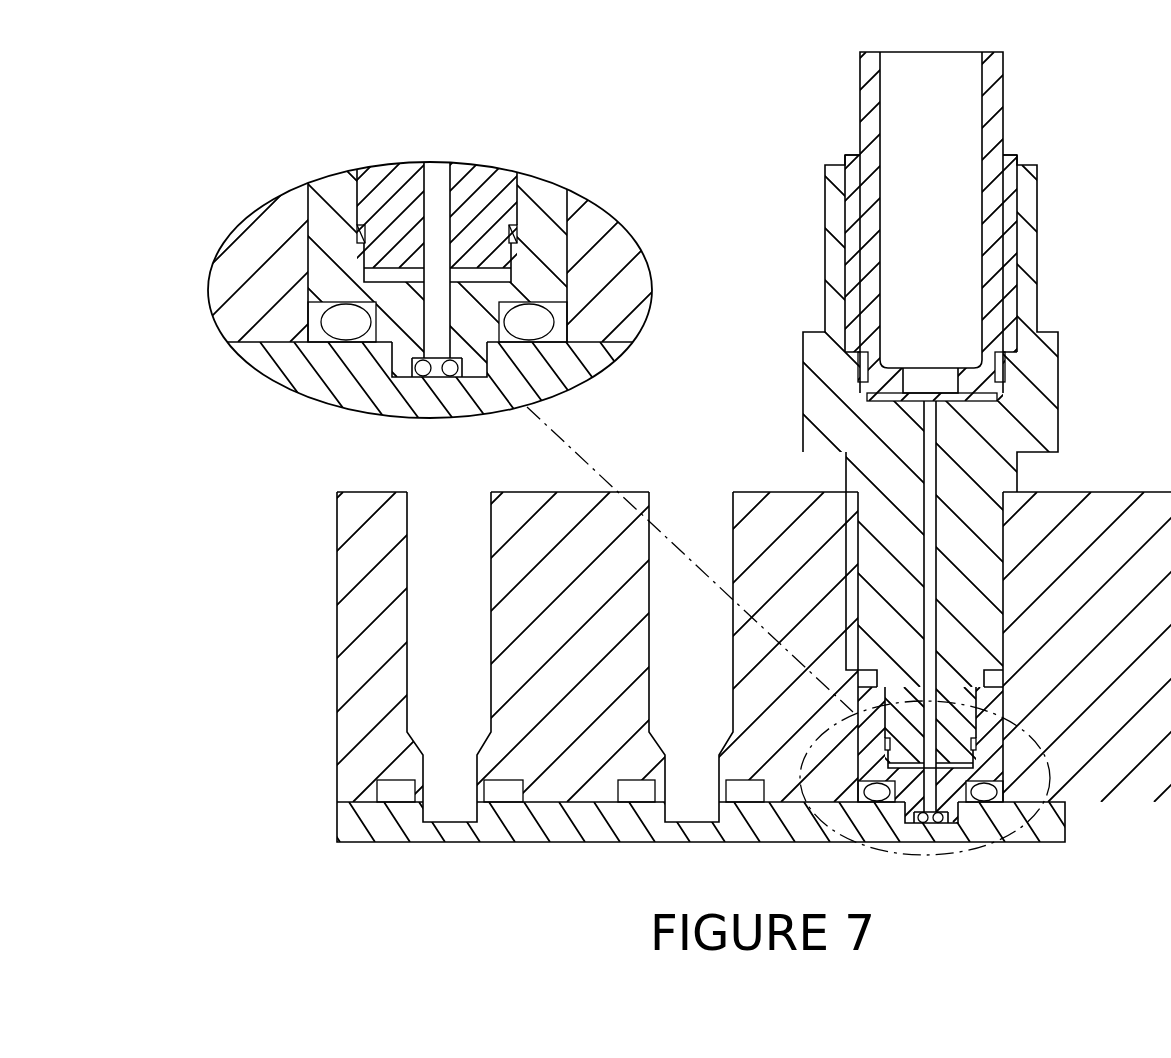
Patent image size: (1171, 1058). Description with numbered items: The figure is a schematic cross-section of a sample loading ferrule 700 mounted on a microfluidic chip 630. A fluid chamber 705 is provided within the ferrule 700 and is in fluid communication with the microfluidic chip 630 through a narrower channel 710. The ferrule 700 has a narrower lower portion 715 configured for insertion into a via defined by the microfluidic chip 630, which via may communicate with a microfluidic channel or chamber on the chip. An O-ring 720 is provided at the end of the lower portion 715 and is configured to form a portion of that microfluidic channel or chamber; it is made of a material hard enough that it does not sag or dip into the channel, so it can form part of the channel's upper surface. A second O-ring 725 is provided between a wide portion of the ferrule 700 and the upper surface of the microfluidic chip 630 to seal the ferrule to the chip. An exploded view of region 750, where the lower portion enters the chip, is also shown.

The microfluidic chip 630 is at (1040, 823).
The sample loading ferrule 700 is at (1040, 414).
The fluid chamber 705 is at (949, 201).
The narrower channel 710 is at (940, 518).
The lower portion 715 is at (944, 818).
The O-ring 720 is at (897, 823).
The second O-ring 725 is at (980, 797).
The region 750 is at (598, 198).